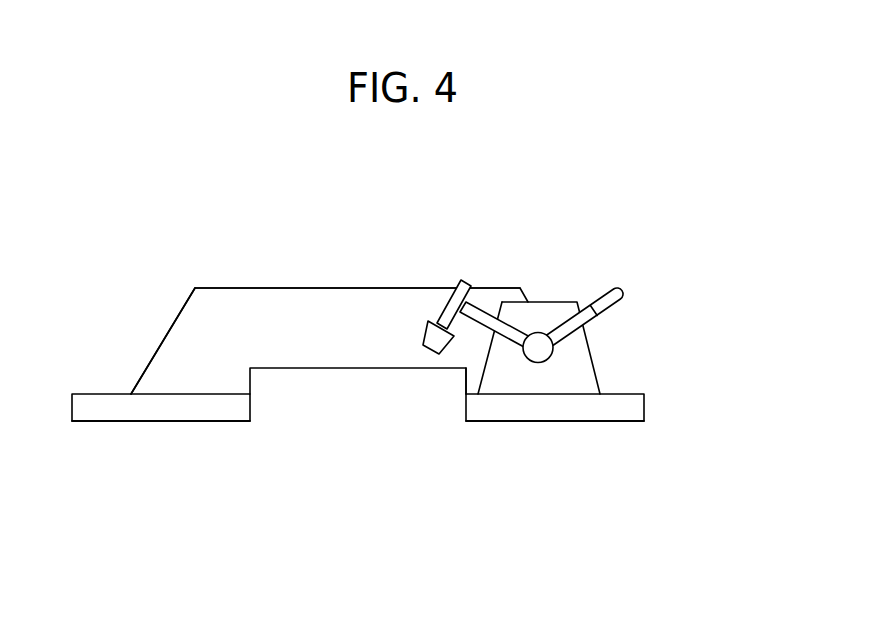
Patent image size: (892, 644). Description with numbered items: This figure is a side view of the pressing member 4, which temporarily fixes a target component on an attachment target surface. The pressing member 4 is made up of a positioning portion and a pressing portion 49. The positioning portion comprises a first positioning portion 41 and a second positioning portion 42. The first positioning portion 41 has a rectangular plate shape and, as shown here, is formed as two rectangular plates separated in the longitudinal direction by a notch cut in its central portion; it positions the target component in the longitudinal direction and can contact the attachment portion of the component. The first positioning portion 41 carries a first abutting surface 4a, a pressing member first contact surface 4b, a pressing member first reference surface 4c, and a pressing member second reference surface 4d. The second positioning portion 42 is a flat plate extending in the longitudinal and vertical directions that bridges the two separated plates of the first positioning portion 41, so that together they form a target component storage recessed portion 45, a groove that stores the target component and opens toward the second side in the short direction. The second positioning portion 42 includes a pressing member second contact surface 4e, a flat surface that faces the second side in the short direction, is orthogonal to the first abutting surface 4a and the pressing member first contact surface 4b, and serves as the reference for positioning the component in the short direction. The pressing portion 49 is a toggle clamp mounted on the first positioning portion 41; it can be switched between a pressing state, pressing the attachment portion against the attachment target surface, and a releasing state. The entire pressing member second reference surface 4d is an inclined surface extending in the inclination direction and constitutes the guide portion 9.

The pressing member 4 is at (630, 260).
The first positioning portion 41 is at (633, 410).
The second positioning portion 42 is at (258, 288).
The target component storage recessed portion 45 is at (466, 408).
The pressing portion 49 is at (573, 368).
The first abutting surface 4a is at (208, 422).
The pressing member first contact surface 4b is at (250, 407).
The pressing member first reference surface 4c is at (72, 407).
The pressing member second reference surface 4d is at (358, 467).
The pressing member second contact surface 4e is at (203, 333).
The guide portion 9 is at (163, 413).